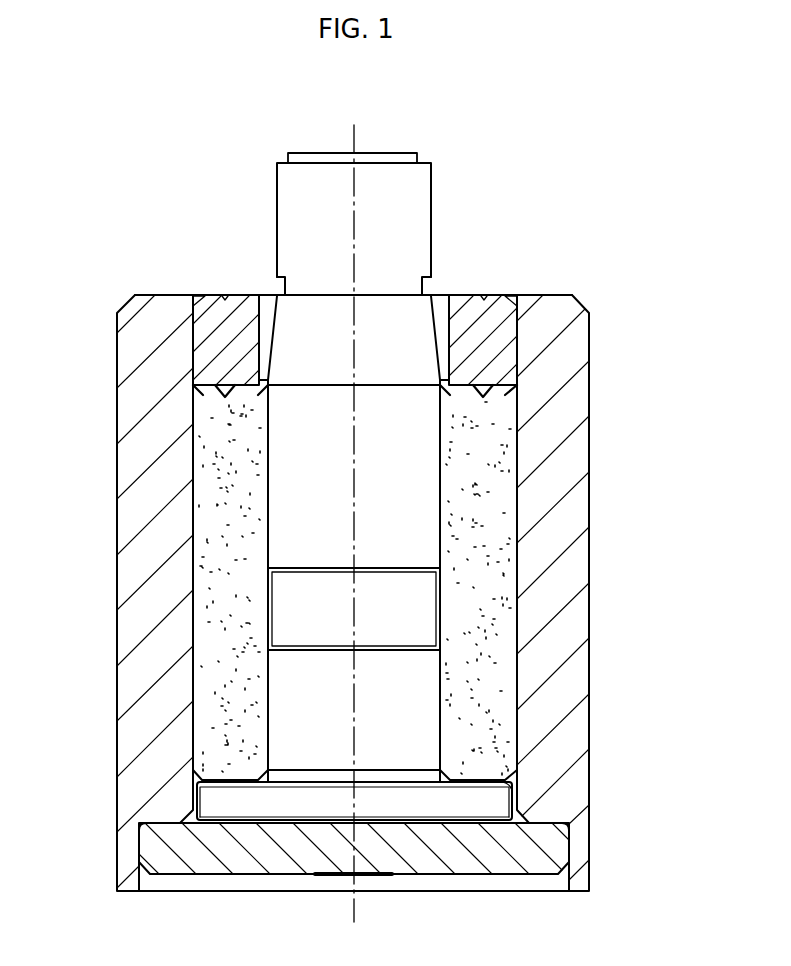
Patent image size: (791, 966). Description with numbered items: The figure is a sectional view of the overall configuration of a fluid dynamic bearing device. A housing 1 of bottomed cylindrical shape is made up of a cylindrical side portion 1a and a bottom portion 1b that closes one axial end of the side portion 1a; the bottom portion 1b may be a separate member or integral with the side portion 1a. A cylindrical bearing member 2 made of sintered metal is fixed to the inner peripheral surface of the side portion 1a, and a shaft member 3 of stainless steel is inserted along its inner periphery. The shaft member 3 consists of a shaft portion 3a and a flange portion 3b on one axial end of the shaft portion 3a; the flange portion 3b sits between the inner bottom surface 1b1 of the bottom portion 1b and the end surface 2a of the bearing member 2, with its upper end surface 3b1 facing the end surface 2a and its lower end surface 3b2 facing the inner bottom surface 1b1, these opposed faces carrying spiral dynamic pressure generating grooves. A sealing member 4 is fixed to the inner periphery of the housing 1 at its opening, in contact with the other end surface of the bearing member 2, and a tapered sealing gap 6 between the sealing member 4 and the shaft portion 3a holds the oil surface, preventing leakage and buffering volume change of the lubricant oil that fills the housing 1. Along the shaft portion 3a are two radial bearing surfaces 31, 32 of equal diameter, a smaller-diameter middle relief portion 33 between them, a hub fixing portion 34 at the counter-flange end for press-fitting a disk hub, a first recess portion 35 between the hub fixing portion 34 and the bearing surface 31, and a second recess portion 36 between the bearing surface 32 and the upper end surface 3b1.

The housing 1 is at (389, 593).
The side portion 1a is at (553, 537).
The bottom portion 1b is at (354, 878).
The end surface (inner bottom surface) 1b1 is at (306, 823).
The bearing member 2 is at (346, 593).
The end surface 2a is at (229, 783).
The shaft member 3 is at (359, 500).
The shaft portion 3a is at (352, 533).
The flange portion 3b is at (428, 800).
The upper end surface 3b1 is at (510, 782).
The lower end surface 3b2 is at (493, 826).
The sealing member 4 is at (503, 362).
The sealing gap 6 is at (266, 312).
The radial bearing surface 31 is at (440, 422).
The radial bearing surface 32 is at (440, 686).
The middle relief portion 33 is at (440, 604).
The hub fixing portion 34 is at (431, 218).
The first recess portion 35 is at (484, 780).
The second recess portion 36 is at (422, 287).